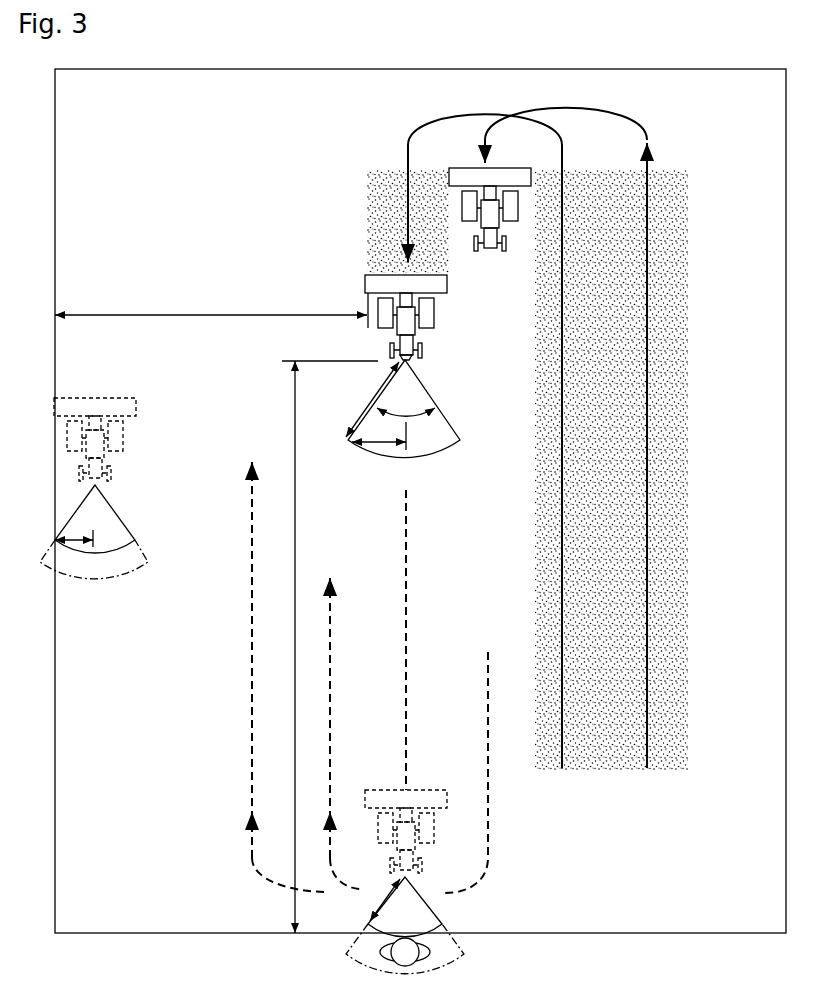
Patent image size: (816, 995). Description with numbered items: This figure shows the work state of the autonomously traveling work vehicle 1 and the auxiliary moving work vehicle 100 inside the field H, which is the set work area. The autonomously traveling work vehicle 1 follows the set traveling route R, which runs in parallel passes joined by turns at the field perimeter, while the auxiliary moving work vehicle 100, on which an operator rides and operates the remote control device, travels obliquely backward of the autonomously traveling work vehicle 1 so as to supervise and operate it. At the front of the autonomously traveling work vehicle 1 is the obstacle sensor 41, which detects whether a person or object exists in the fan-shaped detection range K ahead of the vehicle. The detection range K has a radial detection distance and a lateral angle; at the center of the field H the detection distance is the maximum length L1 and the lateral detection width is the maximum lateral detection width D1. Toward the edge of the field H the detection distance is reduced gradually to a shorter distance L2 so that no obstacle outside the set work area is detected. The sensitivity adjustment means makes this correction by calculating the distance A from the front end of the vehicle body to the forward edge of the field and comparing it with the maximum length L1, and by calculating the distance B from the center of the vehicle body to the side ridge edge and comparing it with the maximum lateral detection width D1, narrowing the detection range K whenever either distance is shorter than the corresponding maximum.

The autonomously traveling work vehicle 1 is at (360, 280).
The obstacle sensor 41 is at (405, 356).
The auxiliary moving work vehicle 100 is at (510, 268).
The field H is at (284, 139).
The detection range K is at (434, 439).
The set traveling route R is at (246, 600).
The distance to forward edge of field A is at (327, 647).
The distance to side ridge edge B is at (211, 303).
The maximum length L1 is at (369, 399).
The reduced detection distance L2 is at (377, 900).
The maximum lateral detection width D1 is at (379, 436).